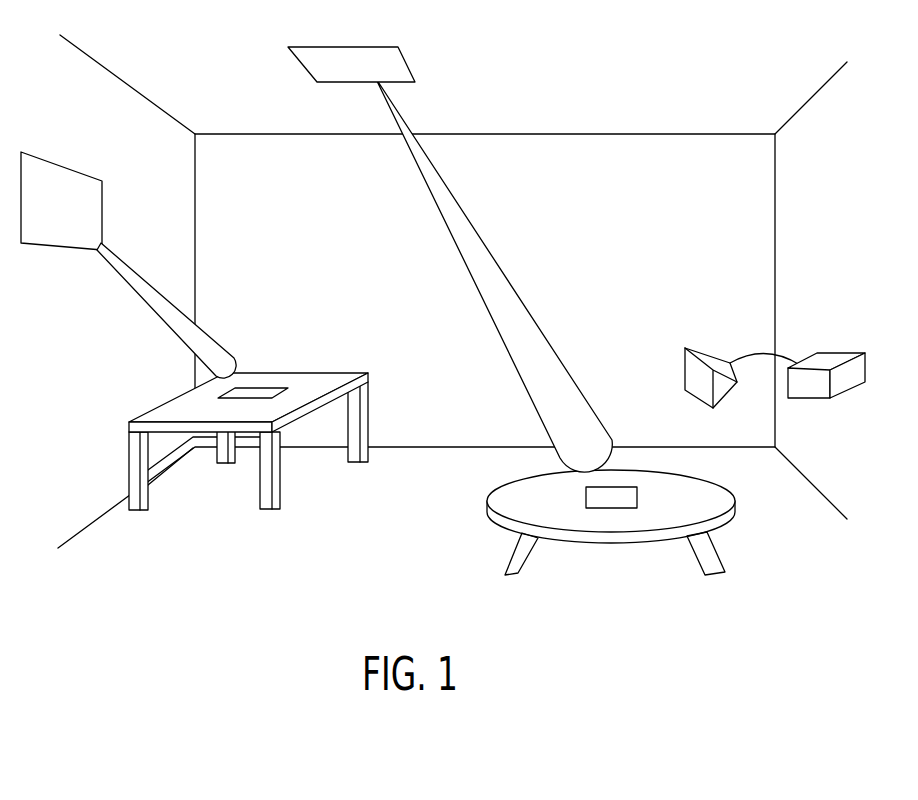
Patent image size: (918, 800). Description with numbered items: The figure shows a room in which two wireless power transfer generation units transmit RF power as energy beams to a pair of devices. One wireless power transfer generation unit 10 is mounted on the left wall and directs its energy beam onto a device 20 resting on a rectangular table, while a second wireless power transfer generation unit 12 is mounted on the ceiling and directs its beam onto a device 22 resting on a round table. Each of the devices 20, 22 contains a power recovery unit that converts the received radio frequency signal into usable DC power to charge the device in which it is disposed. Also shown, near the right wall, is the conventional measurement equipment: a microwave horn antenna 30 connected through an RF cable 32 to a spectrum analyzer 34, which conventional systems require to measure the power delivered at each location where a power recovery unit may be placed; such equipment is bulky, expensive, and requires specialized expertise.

The wireless power transfer generation unit 10 is at (61, 248).
The wireless power transfer generation unit 12 is at (407, 63).
The device 20 is at (260, 385).
The device 22 is at (623, 487).
The microwave horn antenna 30 is at (712, 352).
The RF cable 32 is at (782, 352).
The spectrum analyzer 34 is at (808, 398).